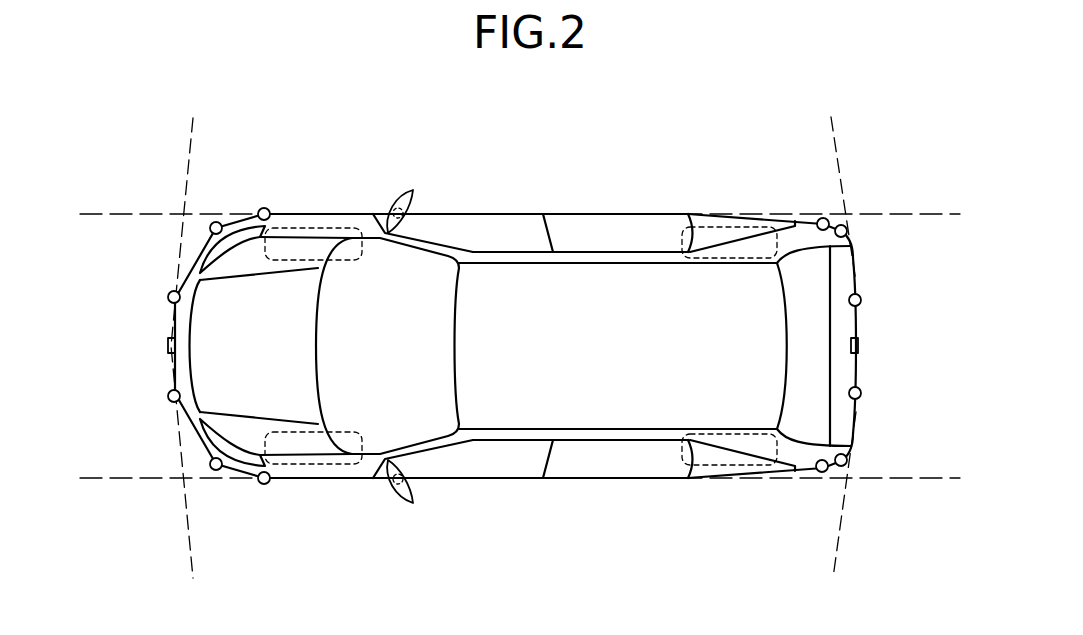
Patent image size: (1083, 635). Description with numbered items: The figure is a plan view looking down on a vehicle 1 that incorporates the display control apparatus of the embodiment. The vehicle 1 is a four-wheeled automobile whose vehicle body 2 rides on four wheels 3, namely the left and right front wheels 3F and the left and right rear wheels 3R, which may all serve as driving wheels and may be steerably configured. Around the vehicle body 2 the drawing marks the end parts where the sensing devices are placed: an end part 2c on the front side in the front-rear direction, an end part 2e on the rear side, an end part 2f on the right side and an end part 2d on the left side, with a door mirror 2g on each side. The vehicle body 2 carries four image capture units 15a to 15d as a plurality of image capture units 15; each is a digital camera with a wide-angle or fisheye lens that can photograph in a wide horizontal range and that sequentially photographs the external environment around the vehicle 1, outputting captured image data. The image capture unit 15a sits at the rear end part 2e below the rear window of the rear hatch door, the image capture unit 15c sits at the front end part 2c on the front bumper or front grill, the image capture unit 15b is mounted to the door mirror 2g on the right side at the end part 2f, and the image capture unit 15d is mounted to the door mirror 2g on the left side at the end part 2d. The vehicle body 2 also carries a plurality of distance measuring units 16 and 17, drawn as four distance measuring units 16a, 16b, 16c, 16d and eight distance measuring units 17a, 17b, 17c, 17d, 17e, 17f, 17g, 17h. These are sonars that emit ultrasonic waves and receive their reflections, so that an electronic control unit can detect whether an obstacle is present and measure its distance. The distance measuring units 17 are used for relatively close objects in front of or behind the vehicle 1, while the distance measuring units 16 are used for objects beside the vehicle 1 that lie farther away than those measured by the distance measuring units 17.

The vehicle 1 is at (634, 127).
The vehicle body 2 is at (800, 212).
The end part on the front side 2c is at (168, 363).
The end part on the left side 2d is at (620, 478).
The end part on the rear side 2e is at (859, 360).
The end part on the right side 2f is at (636, 213).
The door mirror 2g is at (413, 192).
The wheels 3 is at (521, 348).
The front wheels 3F is at (310, 227).
The rear wheels 3R is at (728, 226).
The image capture units 15 is at (525, 364).
The image capture unit 15a is at (859, 346).
The image capture unit 15b is at (398, 207).
The image capture unit 15c is at (168, 345).
The image capture unit 15d is at (398, 484).
The distance measuring units 16 is at (531, 328).
The distance measuring unit 16a is at (822, 472).
The distance measuring unit 16b is at (824, 218).
The distance measuring unit 16c is at (264, 208).
The distance measuring unit 16d is at (264, 483).
The distance measuring units 17 is at (524, 316).
The distance measuring unit 17a is at (847, 460).
The distance measuring unit 17b is at (860, 396).
The distance measuring unit 17c is at (860, 296).
The distance measuring unit 17d is at (846, 227).
The distance measuring unit 17e is at (210, 228).
The distance measuring unit 17f is at (168, 297).
The distance measuring unit 17g is at (168, 396).
The distance measuring unit 17h is at (210, 464).